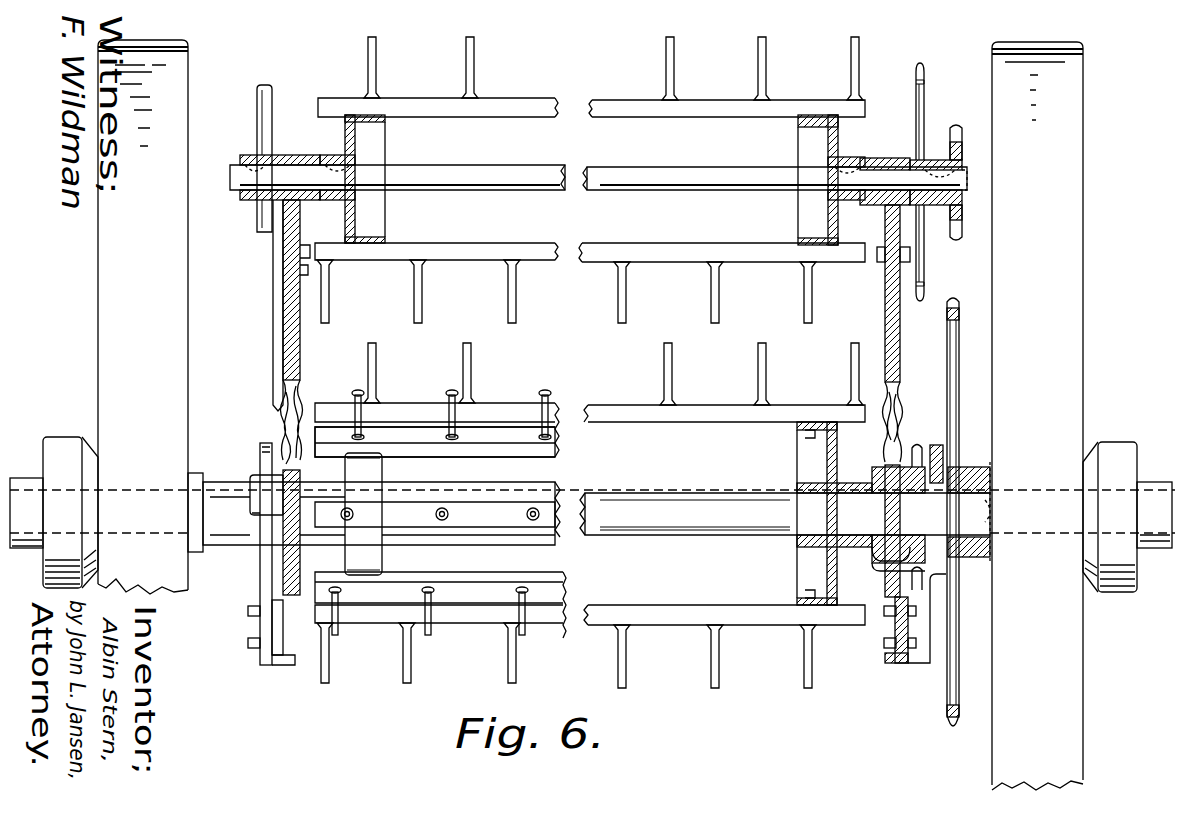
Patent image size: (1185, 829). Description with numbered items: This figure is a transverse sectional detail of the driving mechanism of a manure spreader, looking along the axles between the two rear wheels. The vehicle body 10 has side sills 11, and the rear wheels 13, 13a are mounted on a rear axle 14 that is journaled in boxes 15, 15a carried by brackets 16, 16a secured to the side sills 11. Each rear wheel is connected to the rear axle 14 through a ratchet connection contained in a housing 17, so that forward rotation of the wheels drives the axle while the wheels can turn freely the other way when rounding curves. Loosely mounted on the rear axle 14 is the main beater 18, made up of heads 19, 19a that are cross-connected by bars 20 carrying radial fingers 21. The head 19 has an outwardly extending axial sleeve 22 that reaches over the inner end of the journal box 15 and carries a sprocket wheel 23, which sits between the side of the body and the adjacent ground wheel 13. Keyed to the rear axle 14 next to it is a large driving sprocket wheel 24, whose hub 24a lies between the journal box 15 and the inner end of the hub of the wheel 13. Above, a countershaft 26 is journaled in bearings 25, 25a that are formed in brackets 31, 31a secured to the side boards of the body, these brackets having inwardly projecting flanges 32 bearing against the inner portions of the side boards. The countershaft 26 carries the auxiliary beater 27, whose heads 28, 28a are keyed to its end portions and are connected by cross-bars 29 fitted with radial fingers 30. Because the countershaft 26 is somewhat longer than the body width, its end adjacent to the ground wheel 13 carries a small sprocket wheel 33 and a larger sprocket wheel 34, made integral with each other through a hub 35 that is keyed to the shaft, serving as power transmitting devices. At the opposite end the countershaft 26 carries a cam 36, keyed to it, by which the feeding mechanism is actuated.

The vehicle body 10 is at (285, 338).
The side sills 11 is at (270, 625).
The rear wheel 13 is at (1085, 418).
The rear wheel 13a is at (98, 337).
The rear axle 14 is at (592, 532).
The journal box 15 is at (878, 560).
The journal box 15a is at (244, 480).
The bracket 16 is at (915, 625).
The bracket 16a is at (258, 590).
The housing 17 is at (66, 440).
The main beater 18 is at (566, 446).
The head 19 is at (838, 462).
The head 19a is at (384, 462).
The bars 20 is at (505, 425).
The radial fingers 21 is at (465, 372).
The axial sleeve 22 is at (880, 476).
The sprocket wheel 23 is at (916, 446).
The driving sprocket wheel 24 is at (950, 368).
The hub 24a is at (965, 470).
The bearing 25 is at (878, 158).
The bearing 25a is at (316, 146).
The countershaft 26 is at (691, 171).
The auxiliary beater 27 is at (561, 94).
The head 28 is at (828, 145).
The head 28a is at (356, 140).
The cross-bars 29 is at (590, 120).
The radial fingers 30 is at (378, 70).
The bracket 31 is at (926, 268).
The bracket 31a is at (277, 265).
The flanges 32 is at (305, 250).
The small sprocket wheel 33 is at (961, 136).
The larger sprocket wheel 34 is at (926, 80).
The hub 35 is at (938, 158).
The cam 36 is at (266, 86).